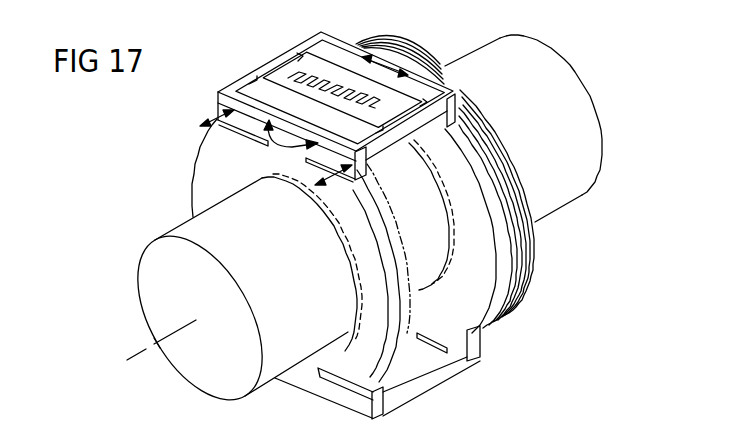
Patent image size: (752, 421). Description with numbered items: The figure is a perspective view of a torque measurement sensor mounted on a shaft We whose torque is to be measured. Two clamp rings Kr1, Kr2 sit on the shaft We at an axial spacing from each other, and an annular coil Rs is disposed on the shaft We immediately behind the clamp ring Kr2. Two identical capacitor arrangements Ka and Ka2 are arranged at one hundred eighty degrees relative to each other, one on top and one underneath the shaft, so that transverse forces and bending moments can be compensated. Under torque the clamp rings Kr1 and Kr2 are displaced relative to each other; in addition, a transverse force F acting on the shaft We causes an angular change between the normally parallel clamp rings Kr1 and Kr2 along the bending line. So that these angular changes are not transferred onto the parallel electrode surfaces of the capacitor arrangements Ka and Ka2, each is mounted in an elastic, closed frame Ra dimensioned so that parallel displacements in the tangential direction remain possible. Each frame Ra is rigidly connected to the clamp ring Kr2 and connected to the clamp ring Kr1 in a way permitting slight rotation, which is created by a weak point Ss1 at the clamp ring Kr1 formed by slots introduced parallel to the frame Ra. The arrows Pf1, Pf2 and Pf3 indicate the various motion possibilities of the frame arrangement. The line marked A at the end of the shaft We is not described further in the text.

The capacitor arrangement Ka is at (251, 57).
The capacitor arrangement Ka2 is at (450, 394).
The arrow Pf1 is at (212, 115).
The arrow Pf2 is at (278, 150).
The arrow Pf3 is at (352, 43).
The closed frame Ra is at (378, 150).
The weak point Ss1 is at (292, 160).
The transverse force F is at (118, 282).
The shaft We is at (583, 197).
The shaft axis / end face A is at (600, 77).
The annular coil Rs is at (530, 273).
The clamp ring Kr1 is at (386, 358).
The clamp ring Kr2 is at (508, 318).